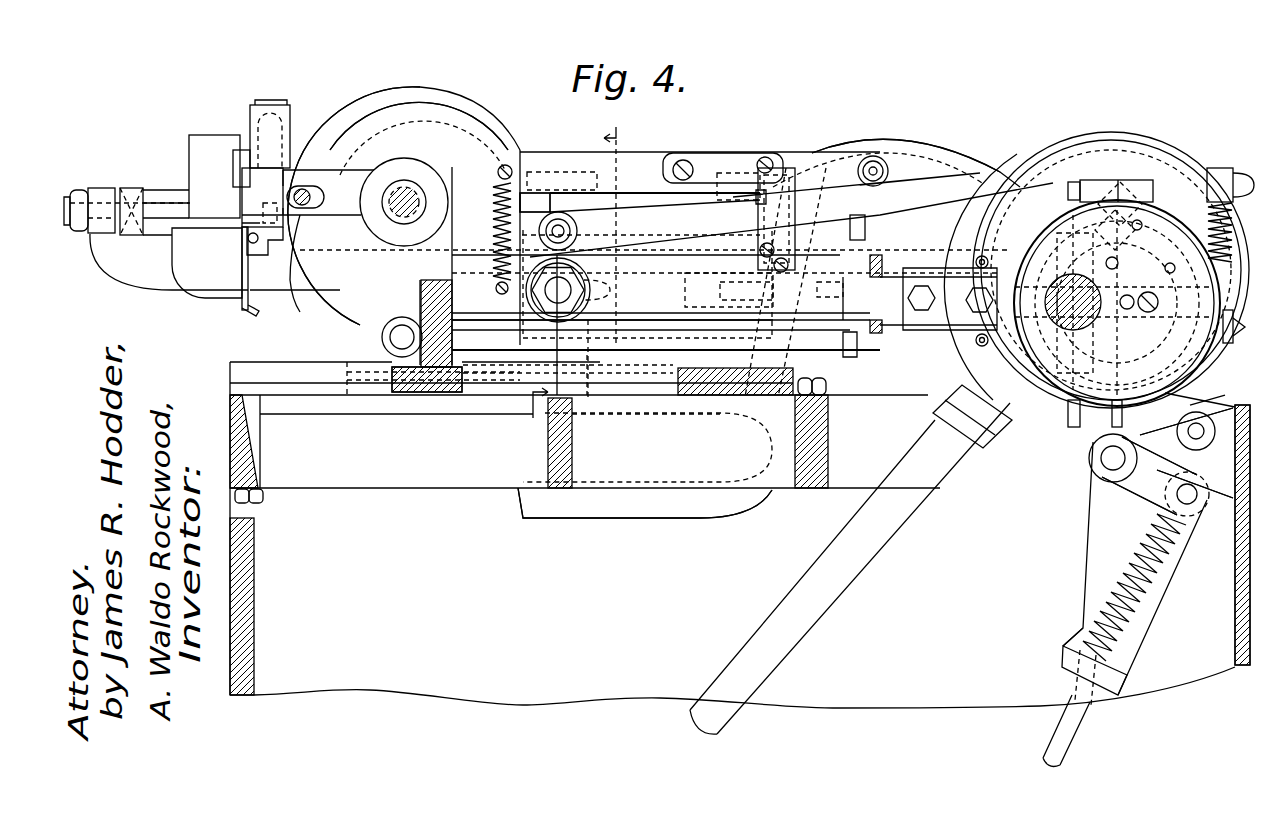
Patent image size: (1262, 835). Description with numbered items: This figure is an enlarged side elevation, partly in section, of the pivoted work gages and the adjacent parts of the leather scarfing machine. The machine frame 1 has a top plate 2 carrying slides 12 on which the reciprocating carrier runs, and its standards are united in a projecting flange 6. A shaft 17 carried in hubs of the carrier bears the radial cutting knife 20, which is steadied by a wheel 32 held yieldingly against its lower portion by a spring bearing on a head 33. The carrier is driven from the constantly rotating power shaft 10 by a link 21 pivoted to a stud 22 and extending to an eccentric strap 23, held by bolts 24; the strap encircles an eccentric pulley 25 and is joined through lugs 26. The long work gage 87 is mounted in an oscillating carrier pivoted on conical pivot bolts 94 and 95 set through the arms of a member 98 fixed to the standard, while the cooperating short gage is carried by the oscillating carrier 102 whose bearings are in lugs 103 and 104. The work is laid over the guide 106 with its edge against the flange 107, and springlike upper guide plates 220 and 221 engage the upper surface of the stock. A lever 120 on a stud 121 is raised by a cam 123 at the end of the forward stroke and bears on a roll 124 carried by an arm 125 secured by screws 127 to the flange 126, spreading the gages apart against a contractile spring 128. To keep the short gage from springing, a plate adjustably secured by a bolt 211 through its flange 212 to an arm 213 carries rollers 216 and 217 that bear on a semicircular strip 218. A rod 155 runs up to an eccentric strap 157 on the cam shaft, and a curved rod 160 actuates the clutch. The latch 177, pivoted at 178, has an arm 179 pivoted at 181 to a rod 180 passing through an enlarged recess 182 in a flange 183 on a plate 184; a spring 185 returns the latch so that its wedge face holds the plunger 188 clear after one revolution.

The machine frame 1 is at (1233, 535).
The top plate 2 is at (1240, 463).
The projecting flange 6 is at (572, 276).
The power shaft 10 is at (1058, 290).
The slide 12 is at (292, 370).
The shaft 17 is at (408, 196).
The radial cutting knife 20 is at (418, 102).
The link 21 is at (572, 294).
The stud 22 is at (535, 292).
The eccentric strap 23 is at (1207, 416).
The bolt 24 is at (973, 310).
The eccentric pulley 25 is at (1212, 385).
The lug 26 is at (1130, 180).
The wheel 32 is at (368, 331).
The head 33 is at (398, 350).
The work gage 87 is at (207, 205).
The pivot bolt 94 is at (88, 196).
The pivot bolt 95 is at (866, 229).
The member 98 is at (290, 280).
The oscillating carrier 102 is at (405, 128).
The lug 103 is at (727, 168).
The lug 104 is at (540, 180).
The guide 106 is at (197, 277).
The flange 107 is at (246, 295).
The lever 120 is at (958, 140).
The stud 121 is at (563, 214).
The cam 123 is at (968, 238).
The roll 124 is at (875, 156).
The arm or plate 125 is at (825, 150).
The flange 126 is at (643, 152).
The screw 127 is at (686, 160).
The contractile spring 128 is at (505, 175).
The rod 155 is at (832, 600).
The eccentric strap 157 is at (1097, 316).
The rod 160 is at (918, 140).
The latch 177 is at (1217, 185).
The pivot 178 is at (1102, 458).
The arm 179 is at (1160, 500).
The rod 180 is at (1068, 731).
The pivot 181 is at (1190, 500).
The enlarged recess 182 is at (1130, 670).
The flange 183 is at (1072, 667).
The plate 184 is at (1084, 589).
The spring 185 is at (1160, 568).
The plunger 188 is at (1170, 200).
The bolt 211 is at (305, 190).
The flange 212 is at (293, 232).
The arm 213 is at (340, 170).
The roller 216 is at (270, 115).
The roller 217 is at (240, 230).
The semicircular strip 218 is at (262, 160).
The plate 220 is at (240, 176).
The plate 221 is at (197, 146).